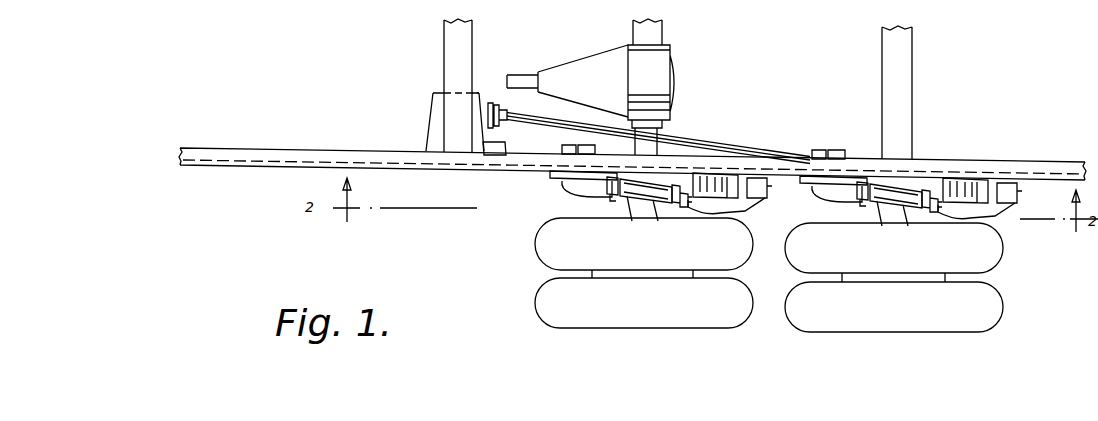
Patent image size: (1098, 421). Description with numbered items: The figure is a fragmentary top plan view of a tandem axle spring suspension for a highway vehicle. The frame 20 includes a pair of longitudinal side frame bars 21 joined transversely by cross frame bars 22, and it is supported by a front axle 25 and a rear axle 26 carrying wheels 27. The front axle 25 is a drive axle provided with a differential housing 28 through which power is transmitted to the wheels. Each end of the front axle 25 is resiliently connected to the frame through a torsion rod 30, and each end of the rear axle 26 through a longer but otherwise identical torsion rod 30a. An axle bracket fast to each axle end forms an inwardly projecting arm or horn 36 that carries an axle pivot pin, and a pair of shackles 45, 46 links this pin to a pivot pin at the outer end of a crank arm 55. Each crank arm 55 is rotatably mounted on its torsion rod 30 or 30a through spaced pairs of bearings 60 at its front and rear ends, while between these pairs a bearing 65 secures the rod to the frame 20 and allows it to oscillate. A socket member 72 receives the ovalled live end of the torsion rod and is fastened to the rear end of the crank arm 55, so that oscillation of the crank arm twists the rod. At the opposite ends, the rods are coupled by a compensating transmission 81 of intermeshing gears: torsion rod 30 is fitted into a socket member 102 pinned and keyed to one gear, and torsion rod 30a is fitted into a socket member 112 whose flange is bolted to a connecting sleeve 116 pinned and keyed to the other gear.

The frame 20 is at (273, 143).
The longitudinal side frame bar 21 is at (383, 152).
The cross frame bar 22 is at (444, 52).
The front axle 25 is at (662, 30).
The rear axle 26 is at (912, 38).
The wheels 27 is at (537, 298).
The differential housing 28 is at (590, 100).
The torsion rod 30 is at (558, 140).
The torsion rod 30a is at (726, 133).
The arm or horn 36 is at (645, 198).
The shackle 45 is at (612, 202).
The shackle 46 is at (684, 208).
The crank arm 55 is at (726, 222).
The bearings 60 is at (558, 156).
The bearing 65 is at (590, 139).
The socket member 72 is at (768, 190).
The compensating transmission 81 is at (425, 106).
The socket member 102 is at (484, 156).
The socket member 112 is at (507, 113).
The connecting sleeve 116 is at (490, 103).